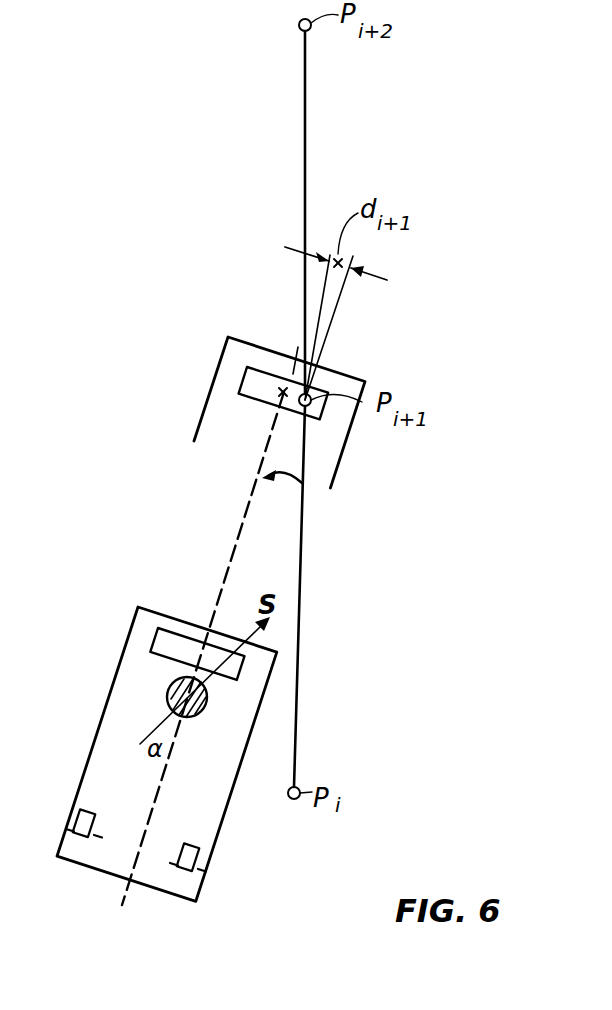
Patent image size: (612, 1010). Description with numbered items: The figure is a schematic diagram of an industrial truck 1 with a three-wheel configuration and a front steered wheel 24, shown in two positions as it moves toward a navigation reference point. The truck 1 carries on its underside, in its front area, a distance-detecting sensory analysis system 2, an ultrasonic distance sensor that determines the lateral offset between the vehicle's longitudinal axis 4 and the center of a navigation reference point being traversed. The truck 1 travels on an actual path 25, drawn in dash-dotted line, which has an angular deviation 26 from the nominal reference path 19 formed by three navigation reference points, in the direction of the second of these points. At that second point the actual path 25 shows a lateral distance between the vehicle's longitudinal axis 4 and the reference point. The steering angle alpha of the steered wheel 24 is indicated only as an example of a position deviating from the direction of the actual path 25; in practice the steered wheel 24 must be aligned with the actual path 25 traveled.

The industrial truck 1 is at (228, 395).
The distance-detecting sensory analysis system 2 is at (267, 383).
The vehicle's longitudinal axis 4 is at (307, 323).
The nominal reference path 19 is at (300, 655).
The front steered wheel 24 is at (166, 697).
The actual path 25 is at (230, 558).
The angular deviation 26 is at (278, 469).